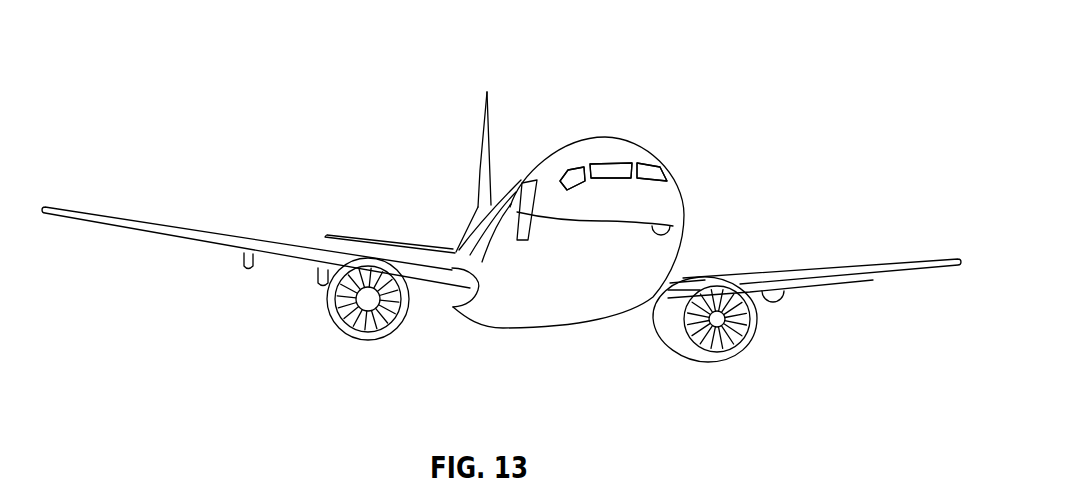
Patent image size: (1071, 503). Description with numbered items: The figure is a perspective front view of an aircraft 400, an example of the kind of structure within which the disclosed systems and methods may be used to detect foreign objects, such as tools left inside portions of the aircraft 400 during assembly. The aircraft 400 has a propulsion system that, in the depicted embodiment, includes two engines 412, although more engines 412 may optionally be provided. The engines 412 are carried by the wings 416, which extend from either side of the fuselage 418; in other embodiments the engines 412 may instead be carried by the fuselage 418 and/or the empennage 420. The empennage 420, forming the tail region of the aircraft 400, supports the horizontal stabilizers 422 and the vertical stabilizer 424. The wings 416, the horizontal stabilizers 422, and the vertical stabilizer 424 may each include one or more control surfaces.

The aircraft 400 is at (275, 44).
The engine 412 is at (363, 341).
The wing 416 is at (165, 230).
The fuselage 418 is at (683, 195).
The empennage 420 is at (477, 220).
The horizontal stabilizer 422 is at (360, 237).
The vertical stabilizer 424 is at (482, 127).